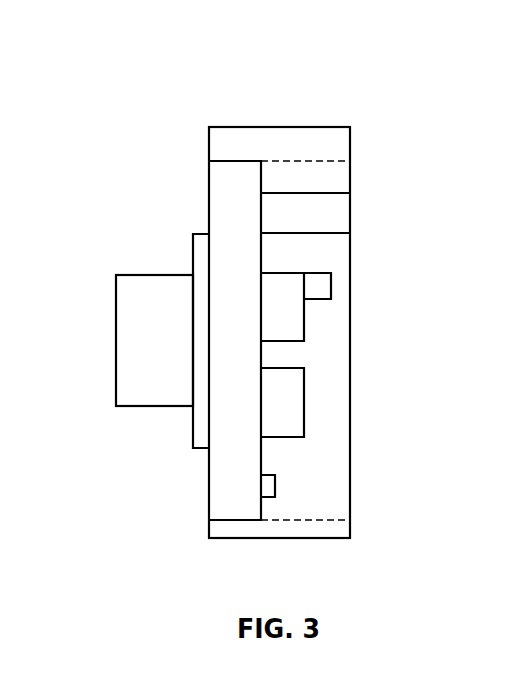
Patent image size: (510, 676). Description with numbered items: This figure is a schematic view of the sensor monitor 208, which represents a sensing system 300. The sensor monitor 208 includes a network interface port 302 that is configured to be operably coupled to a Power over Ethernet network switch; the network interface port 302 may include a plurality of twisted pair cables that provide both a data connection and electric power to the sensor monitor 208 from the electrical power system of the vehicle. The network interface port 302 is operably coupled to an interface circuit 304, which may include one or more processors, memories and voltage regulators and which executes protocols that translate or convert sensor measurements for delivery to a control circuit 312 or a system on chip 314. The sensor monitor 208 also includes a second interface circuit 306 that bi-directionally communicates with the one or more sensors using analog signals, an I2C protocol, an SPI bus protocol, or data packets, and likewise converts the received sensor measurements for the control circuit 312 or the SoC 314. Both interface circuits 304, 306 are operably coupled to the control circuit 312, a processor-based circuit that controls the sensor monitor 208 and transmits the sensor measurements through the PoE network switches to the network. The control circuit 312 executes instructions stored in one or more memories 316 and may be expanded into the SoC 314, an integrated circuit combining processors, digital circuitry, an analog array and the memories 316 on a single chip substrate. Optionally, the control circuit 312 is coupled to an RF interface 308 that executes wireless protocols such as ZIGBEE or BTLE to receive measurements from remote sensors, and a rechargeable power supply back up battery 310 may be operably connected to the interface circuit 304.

The sensor monitor 208 is at (150, 46).
The sensing system 300 is at (352, 46).
The network interface port 302 is at (103, 423).
The interface circuit 304 is at (209, 196).
The interface circuit 306 is at (333, 193).
The RF interface 308 is at (304, 403).
The power supply back up battery 310 is at (275, 487).
The control circuit 312 is at (304, 317).
The system on chip (SoC) 314 is at (285, 520).
The one or more memories 316 is at (331, 287).